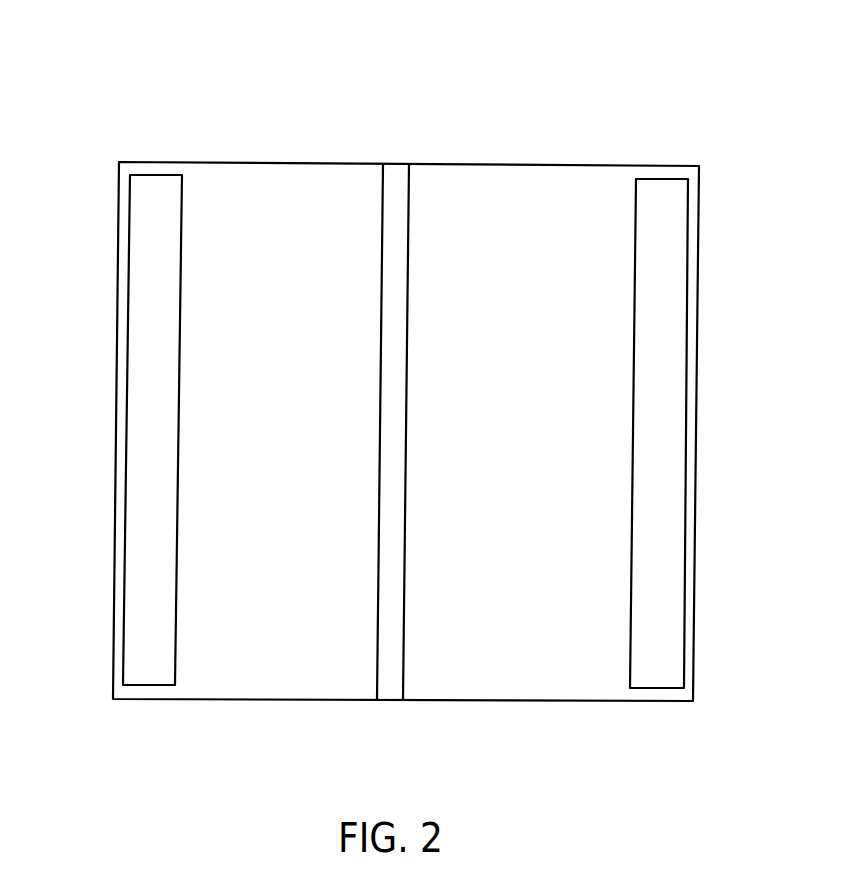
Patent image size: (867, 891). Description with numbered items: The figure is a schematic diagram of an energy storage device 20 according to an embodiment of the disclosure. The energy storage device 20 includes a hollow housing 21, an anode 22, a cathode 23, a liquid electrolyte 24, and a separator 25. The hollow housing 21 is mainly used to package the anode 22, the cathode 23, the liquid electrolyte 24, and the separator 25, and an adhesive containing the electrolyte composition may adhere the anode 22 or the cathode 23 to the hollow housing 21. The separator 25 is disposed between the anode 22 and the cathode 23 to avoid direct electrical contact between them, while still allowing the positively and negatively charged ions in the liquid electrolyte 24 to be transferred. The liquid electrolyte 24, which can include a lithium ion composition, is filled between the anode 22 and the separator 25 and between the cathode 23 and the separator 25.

The energy storage device 20 is at (153, 90).
The hollow housing 21 is at (699, 250).
The anode 22 is at (675, 457).
The cathode 23 is at (129, 398).
The liquid electrolyte 24 is at (266, 186).
The separator 25 is at (400, 187).